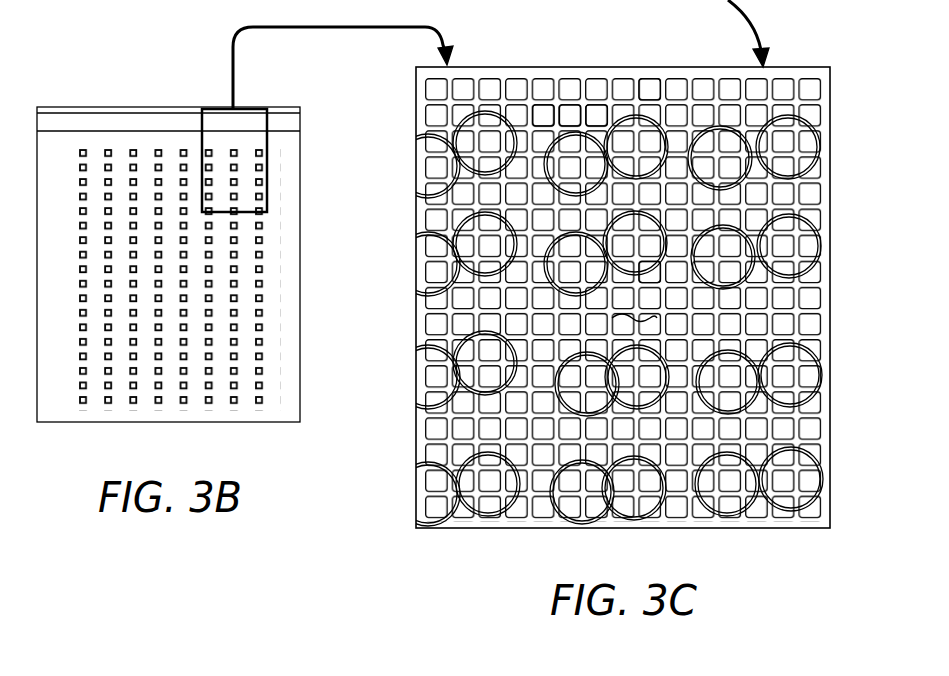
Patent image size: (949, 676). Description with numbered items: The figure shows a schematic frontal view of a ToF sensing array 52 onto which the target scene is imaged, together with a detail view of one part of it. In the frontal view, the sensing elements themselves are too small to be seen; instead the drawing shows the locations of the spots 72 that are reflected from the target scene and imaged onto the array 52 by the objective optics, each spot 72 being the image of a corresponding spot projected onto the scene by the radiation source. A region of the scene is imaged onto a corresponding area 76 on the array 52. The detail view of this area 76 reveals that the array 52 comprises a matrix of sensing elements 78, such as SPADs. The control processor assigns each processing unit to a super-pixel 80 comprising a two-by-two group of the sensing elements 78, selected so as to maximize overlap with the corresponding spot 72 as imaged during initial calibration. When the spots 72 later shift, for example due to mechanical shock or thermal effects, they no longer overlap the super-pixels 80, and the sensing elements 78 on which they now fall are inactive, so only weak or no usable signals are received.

In FIG. 3B, the array 52 is at (98, 108).
In FIG. 3B, the spots 72 is at (262, 243).
In FIG. 3B, the area 76 is at (267, 142).
In FIG. 3C, the sensing elements 78 is at (595, 117).
In FIG. 3C, the super-pixel 80 is at (640, 90).